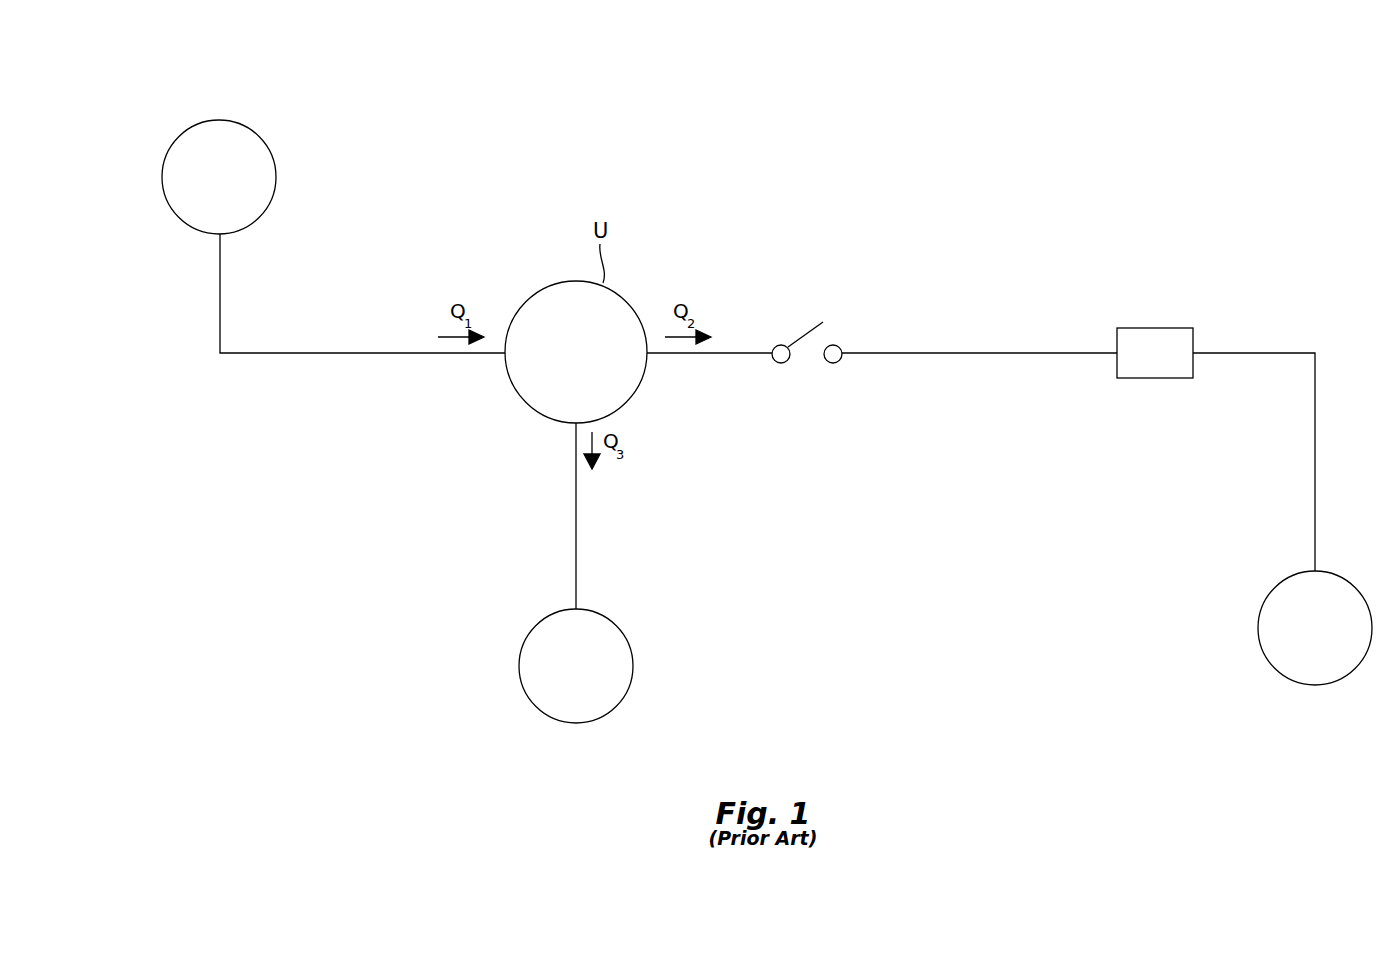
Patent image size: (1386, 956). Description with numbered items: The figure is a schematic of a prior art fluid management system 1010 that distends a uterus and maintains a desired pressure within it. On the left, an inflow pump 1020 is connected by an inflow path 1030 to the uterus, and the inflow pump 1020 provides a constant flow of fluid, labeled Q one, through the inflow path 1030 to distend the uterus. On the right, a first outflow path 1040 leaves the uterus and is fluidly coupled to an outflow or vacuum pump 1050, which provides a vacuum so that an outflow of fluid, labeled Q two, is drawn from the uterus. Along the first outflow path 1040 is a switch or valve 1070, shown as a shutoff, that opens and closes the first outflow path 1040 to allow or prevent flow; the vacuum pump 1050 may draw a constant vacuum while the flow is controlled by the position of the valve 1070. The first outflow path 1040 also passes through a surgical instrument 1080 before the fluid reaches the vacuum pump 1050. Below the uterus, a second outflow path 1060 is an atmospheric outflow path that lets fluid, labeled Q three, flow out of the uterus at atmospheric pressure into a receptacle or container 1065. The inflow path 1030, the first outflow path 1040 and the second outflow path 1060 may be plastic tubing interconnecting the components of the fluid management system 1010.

The fluid management system 1010 is at (622, 156).
The inflow pump 1020 is at (252, 128).
The inflow path 1030 is at (268, 355).
The first outflow path 1040 is at (750, 352).
The outflow or vacuum pump 1050 is at (1261, 598).
The second outflow path 1060 is at (575, 587).
The receptacle or container 1065 is at (634, 636).
The switch or valve 1070 is at (844, 345).
The surgical instrument 1080 is at (1155, 328).